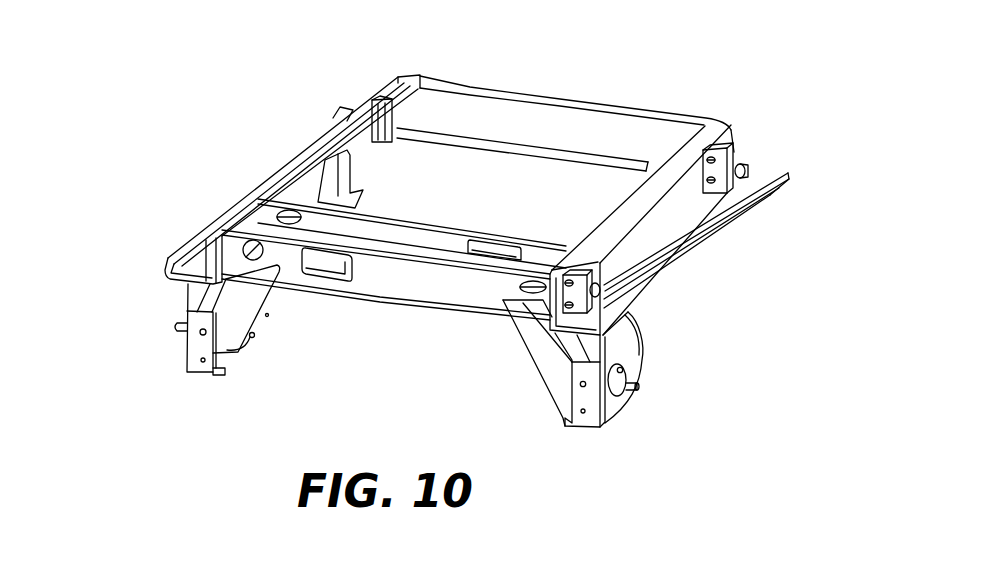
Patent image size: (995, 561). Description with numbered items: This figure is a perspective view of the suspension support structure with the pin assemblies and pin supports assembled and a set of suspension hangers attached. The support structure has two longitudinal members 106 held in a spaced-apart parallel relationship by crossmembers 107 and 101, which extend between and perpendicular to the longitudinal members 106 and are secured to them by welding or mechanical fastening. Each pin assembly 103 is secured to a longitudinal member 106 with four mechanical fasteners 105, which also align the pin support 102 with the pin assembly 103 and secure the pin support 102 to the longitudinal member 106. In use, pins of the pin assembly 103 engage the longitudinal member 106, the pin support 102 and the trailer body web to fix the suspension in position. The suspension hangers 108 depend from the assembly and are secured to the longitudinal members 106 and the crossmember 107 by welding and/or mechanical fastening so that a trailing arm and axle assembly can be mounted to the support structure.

The support structure crossmember 101 is at (645, 105).
The pin support 102 is at (370, 96).
The pin assembly 103 is at (398, 111).
The mechanical fastener 105 is at (388, 151).
The longitudinal member 106 is at (708, 258).
The support structure crossmember 107 is at (381, 306).
The suspension hanger 108 is at (198, 378).